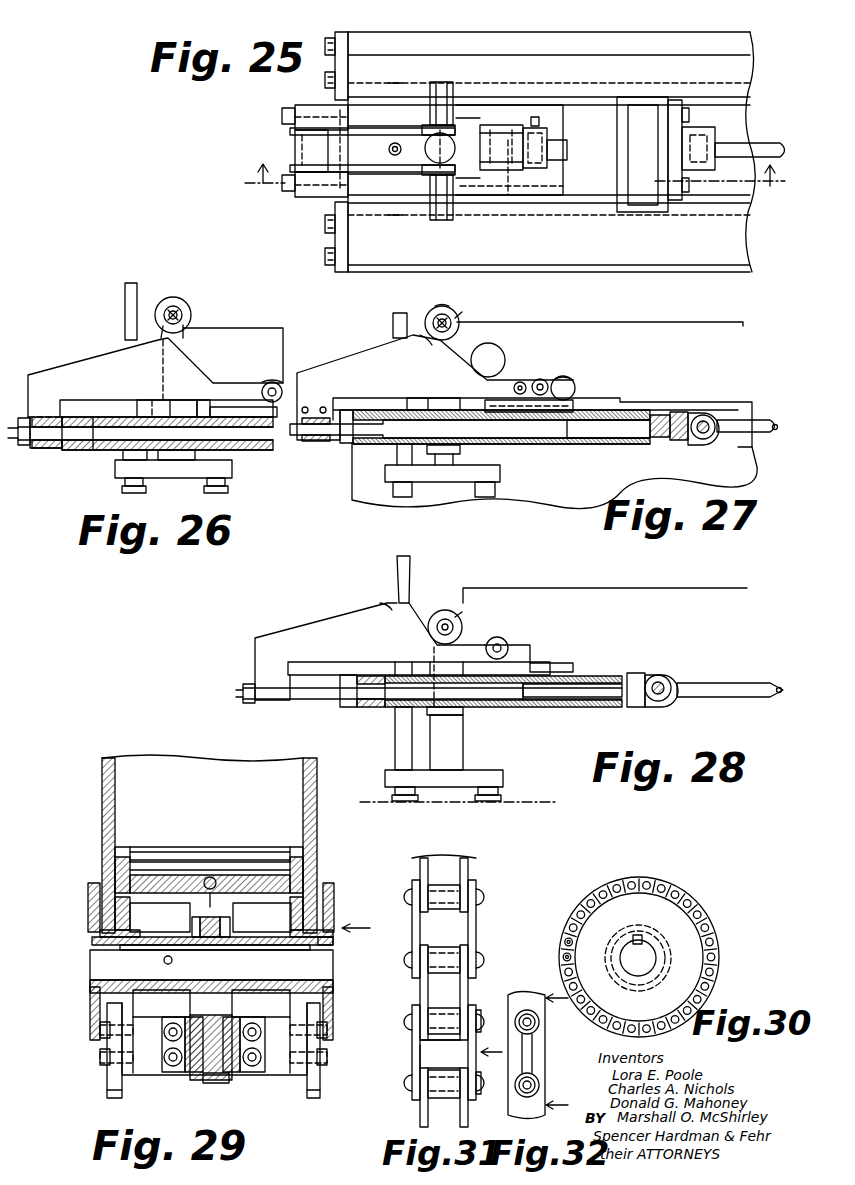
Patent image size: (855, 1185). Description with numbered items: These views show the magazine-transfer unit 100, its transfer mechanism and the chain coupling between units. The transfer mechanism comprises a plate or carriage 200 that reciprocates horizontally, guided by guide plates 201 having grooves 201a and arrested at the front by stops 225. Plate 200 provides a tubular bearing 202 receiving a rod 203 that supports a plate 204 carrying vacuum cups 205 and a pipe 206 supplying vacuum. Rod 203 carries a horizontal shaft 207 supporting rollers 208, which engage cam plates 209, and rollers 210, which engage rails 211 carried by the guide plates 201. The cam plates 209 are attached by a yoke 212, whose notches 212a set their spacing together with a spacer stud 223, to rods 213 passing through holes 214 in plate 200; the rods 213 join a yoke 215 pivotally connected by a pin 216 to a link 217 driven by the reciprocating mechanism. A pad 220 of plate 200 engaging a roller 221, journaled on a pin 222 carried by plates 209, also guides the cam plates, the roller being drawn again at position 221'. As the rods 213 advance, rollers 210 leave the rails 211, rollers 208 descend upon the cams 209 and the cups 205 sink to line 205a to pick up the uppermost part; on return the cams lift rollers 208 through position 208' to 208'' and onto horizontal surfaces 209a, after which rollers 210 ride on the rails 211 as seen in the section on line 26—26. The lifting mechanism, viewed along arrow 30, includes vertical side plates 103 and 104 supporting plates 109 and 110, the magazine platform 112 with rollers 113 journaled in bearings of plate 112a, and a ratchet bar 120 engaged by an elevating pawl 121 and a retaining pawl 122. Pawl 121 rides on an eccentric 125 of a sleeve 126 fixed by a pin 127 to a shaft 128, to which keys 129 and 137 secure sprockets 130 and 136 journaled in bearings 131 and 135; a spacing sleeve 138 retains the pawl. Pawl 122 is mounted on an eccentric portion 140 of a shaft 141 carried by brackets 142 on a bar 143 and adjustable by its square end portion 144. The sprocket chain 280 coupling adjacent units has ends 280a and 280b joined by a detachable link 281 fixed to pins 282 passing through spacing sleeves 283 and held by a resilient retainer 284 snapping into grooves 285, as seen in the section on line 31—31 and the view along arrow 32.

In FIG. 25, the magazine-transfer unit 100 is at (594, 32).
In FIG. 25, the guide plates 201 is at (447, 60).
In FIG. 25, the grooves 201a is at (395, 83).
In FIG. 25, the rails 211 is at (508, 96).
In FIG. 26, the rails 211 is at (258, 328).
In FIG. 27, the rails 211 is at (600, 322).
In FIG. 28, the rails 211 is at (565, 588).
In FIG. 25, the rollers 210 is at (462, 88).
In FIG. 26, the rollers 210 is at (186, 335).
In FIG. 27, the rollers 210 is at (460, 314).
In FIG. 28, the rollers 210 is at (460, 615).
In FIG. 25, the stops 225 is at (339, 32).
In FIG. 26, the stops 225 is at (30, 448).
In FIG. 27, the stops 225 is at (348, 443).
In FIG. 28, the stops 225 is at (344, 707).
In FIG. 25, the rods 213 is at (320, 105).
In FIG. 26, the rods 213 is at (240, 432).
In FIG. 27, the rods 213 is at (642, 438).
In FIG. 28, the rods 213 is at (575, 707).
In FIG. 25, the yoke 212 is at (292, 165).
In FIG. 26, the yoke 212 is at (48, 450).
In FIG. 27, the yoke 212 is at (322, 441).
In FIG. 28, the yoke 212 is at (278, 703).
In FIG. 25, the notches 212a is at (292, 131).
In FIG. 25, the cam plates 209 is at (372, 126).
In FIG. 26, the cam plates 209 is at (84, 358).
In FIG. 27, the cam plates 209 is at (345, 358).
In FIG. 28, the cam plates 209 is at (308, 622).
In FIG. 27, the horizontal surfaces 209a is at (422, 340).
In FIG. 28, the horizontal surfaces 209a is at (378, 605).
In FIG. 25, the rollers 208 is at (423, 153).
In FIG. 26, the rollers 208 is at (196, 310).
In FIG. 27, the rollers 208 is at (432, 314).
In FIG. 28, the rollers 208 is at (436, 610).
In FIG. 27, the pin alternate position 208' is at (490, 351).
In FIG. 27, the position of rollers 208'' is at (451, 293).
In FIG. 25, the shaft 207 is at (440, 82).
In FIG. 26, the shaft 207 is at (180, 305).
In FIG. 28, the shaft 207 is at (428, 632).
In FIG. 25, the pipe 206 is at (389, 149).
In FIG. 26, the pipe 206 is at (125, 311).
In FIG. 27, the pipe 206 is at (393, 329).
In FIG. 28, the pipe 206 is at (397, 581).
In FIG. 25, the tubular bearing 202 is at (453, 149).
In FIG. 26, the tubular bearing 202 is at (152, 400).
In FIG. 27, the tubular bearing 202 is at (442, 398).
In FIG. 25, the spacer stud 223 is at (520, 128).
In FIG. 27, the spacer stud 223 is at (518, 382).
In FIG. 25, the pin 222 is at (537, 118).
In FIG. 26, the pin 222 is at (265, 385).
In FIG. 27, the pin 222 is at (541, 379).
In FIG. 28, the pin 222 is at (497, 637).
In FIG. 25, the roller 221 is at (569, 145).
In FIG. 26, the roller 221 is at (261, 362).
In FIG. 27, the roller 221 is at (567, 372).
In FIG. 28, the roller 221 is at (514, 637).
In FIG. 27, the roller alternate position 221' is at (588, 356).
In FIG. 25, the pad 220 is at (570, 153).
In FIG. 26, the pad 220 is at (208, 400).
In FIG. 27, the pad 220 is at (576, 406).
In FIG. 28, the pad 220 is at (566, 663).
In FIG. 25, the plate or carriage 200 is at (585, 184).
In FIG. 26, the plate or carriage 200 is at (88, 390).
In FIG. 27, the plate or carriage 200 is at (598, 447).
In FIG. 28, the plate or carriage 200 is at (380, 707).
In FIG. 25, the holes 214 is at (538, 194).
In FIG. 26, the holes 214 is at (262, 450).
In FIG. 27, the holes 214 is at (553, 445).
In FIG. 28, the holes 214 is at (505, 707).
In FIG. 25, the yoke 215 is at (700, 132).
In FIG. 27, the yoke 215 is at (676, 412).
In FIG. 28, the yoke 215 is at (636, 673).
In FIG. 25, the pin 216 is at (700, 170).
In FIG. 27, the pin 216 is at (708, 412).
In FIG. 28, the pin 216 is at (666, 680).
In FIG. 25, the link 217 is at (782, 143).
In FIG. 27, the link 217 is at (775, 420).
In FIG. 28, the link 217 is at (752, 683).
In FIG. 25, the section line 26 is at (515, 188).
In FIG. 27, the rod 203 is at (460, 452).
In FIG. 28, the rod 203 is at (463, 752).
In FIG. 26, the plate 204 is at (115, 469).
In FIG. 27, the plate 204 is at (385, 471).
In FIG. 28, the plate 204 is at (385, 778).
In FIG. 26, the vacuum cups 205 is at (122, 489).
In FIG. 27, the vacuum cups 205 is at (393, 490).
In FIG. 28, the vacuum cups 205 is at (392, 796).
In FIG. 28, the line 205a is at (555, 795).
In FIG. 29, the vertical side plate 103 is at (102, 808).
In FIG. 29, the vertical side plate 104 is at (317, 828).
In FIG. 29, the rollers 113 is at (192, 847).
In FIG. 29, the magazine platform 112 is at (255, 875).
In FIG. 29, the plate 112a is at (122, 850).
In FIG. 29, the ratchet bar 120 is at (213, 877).
In FIG. 29, the plate 109 is at (103, 893).
In FIG. 29, the plate 110 is at (318, 888).
In FIG. 29, the sprocket 130 is at (88, 908).
In FIG. 29, the sprocket 136 is at (334, 897).
In FIG. 30, the sprocket 136 is at (685, 902).
In FIG. 29, the bearing 131 is at (136, 933).
In FIG. 29, the bearing 135 is at (292, 932).
In FIG. 29, the elevating pawl 121 is at (210, 917).
In FIG. 29, the pin 127 is at (190, 933).
In FIG. 29, the key 129 is at (92, 943).
In FIG. 29, the spacing sleeve 138 is at (256, 950).
In FIG. 29, the key 137 is at (330, 944).
In FIG. 30, the key 137 is at (644, 937).
In FIG. 29, the arrow 30 is at (357, 932).
In FIG. 29, the shaft 128 is at (90, 965).
In FIG. 30, the shaft 128 is at (640, 968).
In FIG. 29, the sleeve 126 is at (171, 967).
In FIG. 29, the eccentric 125 is at (190, 997).
In FIG. 29, the retaining pawl 122 is at (261, 1003).
In FIG. 29, the eccentric portion 140 is at (210, 1083).
In FIG. 29, the brackets 142 is at (190, 1073).
In FIG. 29, the shaft 141 is at (163, 1042).
In FIG. 29, the square end portion 144 is at (256, 1042).
In FIG. 29, the bar 143 is at (135, 1080).
In FIG. 30, the sprocket chain 280 is at (665, 885).
In FIG. 31, the sprocket chain 280 is at (416, 862).
In FIG. 30, the resilient retainer 284 is at (583, 953).
In FIG. 32, the resilient retainer 284 is at (545, 1052).
In FIG. 31, the spacing sleeves 283 is at (447, 1008).
In FIG. 31, the pins 282 is at (412, 1022).
In FIG. 31, the detachable link 281 is at (412, 1053).
In FIG. 31, the chain end 280a is at (445, 1047).
In FIG. 31, the chain end 280b is at (445, 1066).
In FIG. 31, the grooves 285 is at (480, 1030).
In FIG. 32, the grooves 285 is at (525, 1010).
In FIG. 31, the arrow 32 is at (494, 1052).
In FIG. 32, the section line 31 is at (559, 1051).